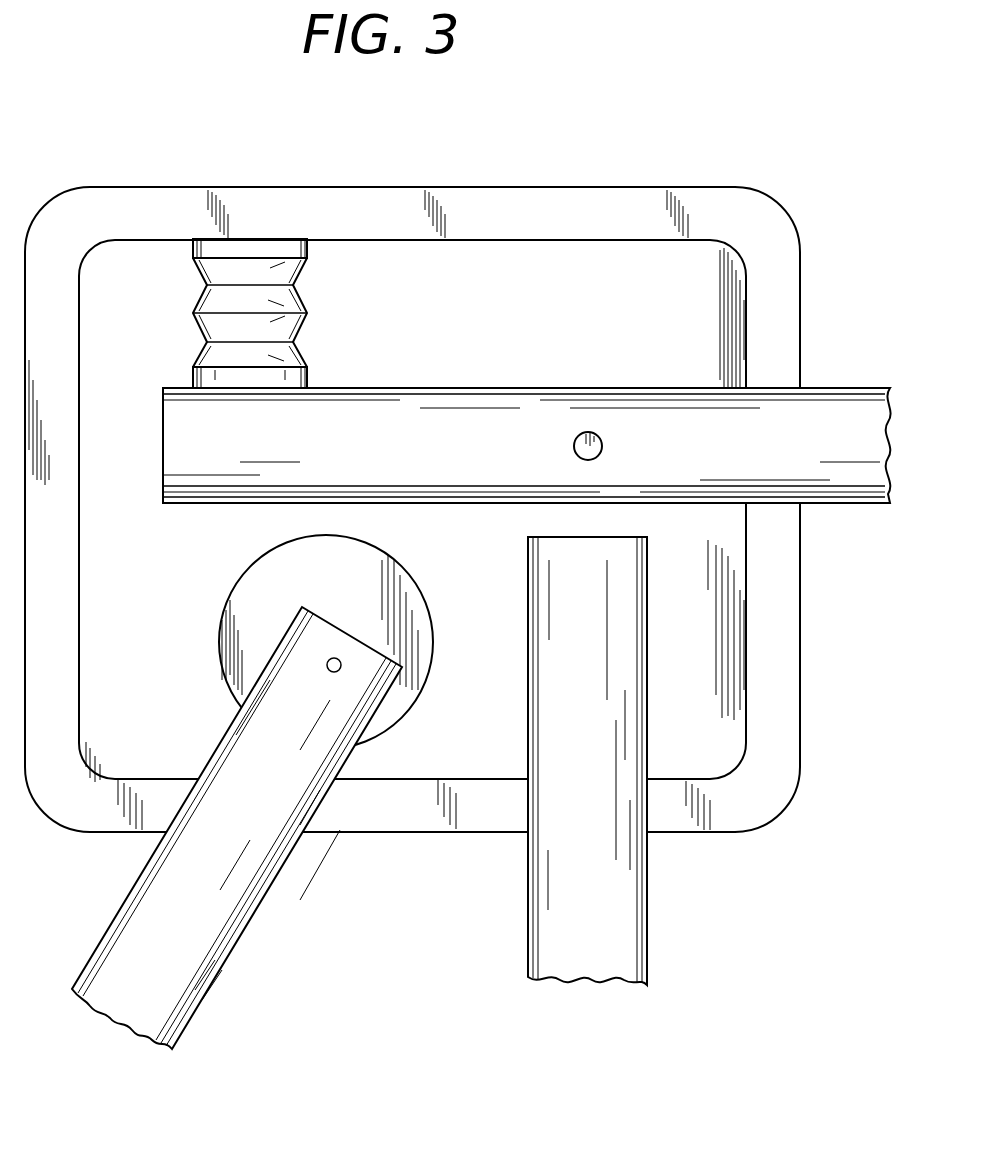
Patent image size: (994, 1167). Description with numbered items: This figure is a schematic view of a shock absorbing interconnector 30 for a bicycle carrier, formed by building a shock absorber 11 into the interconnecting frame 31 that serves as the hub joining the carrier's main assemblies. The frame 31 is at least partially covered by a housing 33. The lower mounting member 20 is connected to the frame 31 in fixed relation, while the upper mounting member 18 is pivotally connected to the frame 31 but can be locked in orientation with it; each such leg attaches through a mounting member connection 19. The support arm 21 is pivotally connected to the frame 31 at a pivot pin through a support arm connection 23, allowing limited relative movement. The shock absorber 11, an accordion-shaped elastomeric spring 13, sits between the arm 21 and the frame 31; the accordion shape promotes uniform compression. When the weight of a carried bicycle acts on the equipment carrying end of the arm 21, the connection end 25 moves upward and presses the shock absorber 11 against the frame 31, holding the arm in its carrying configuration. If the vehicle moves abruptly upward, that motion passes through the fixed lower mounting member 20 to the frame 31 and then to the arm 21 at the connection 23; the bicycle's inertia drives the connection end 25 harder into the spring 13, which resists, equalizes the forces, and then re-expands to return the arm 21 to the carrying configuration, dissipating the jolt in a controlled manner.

The shock absorber 11 is at (318, 335).
The elastomeric spring 13 is at (208, 378).
The upper mounting member 18 is at (230, 912).
The mounting member connection 19 is at (413, 712).
The lower mounting member 20 is at (623, 890).
The support arm 21 is at (835, 388).
The support arm connection 23 is at (533, 455).
The connection end 25 is at (228, 525).
The shock absorbing interconnector 30 is at (723, 135).
The interconnecting frame 31 is at (640, 242).
The housing 33 is at (327, 186).